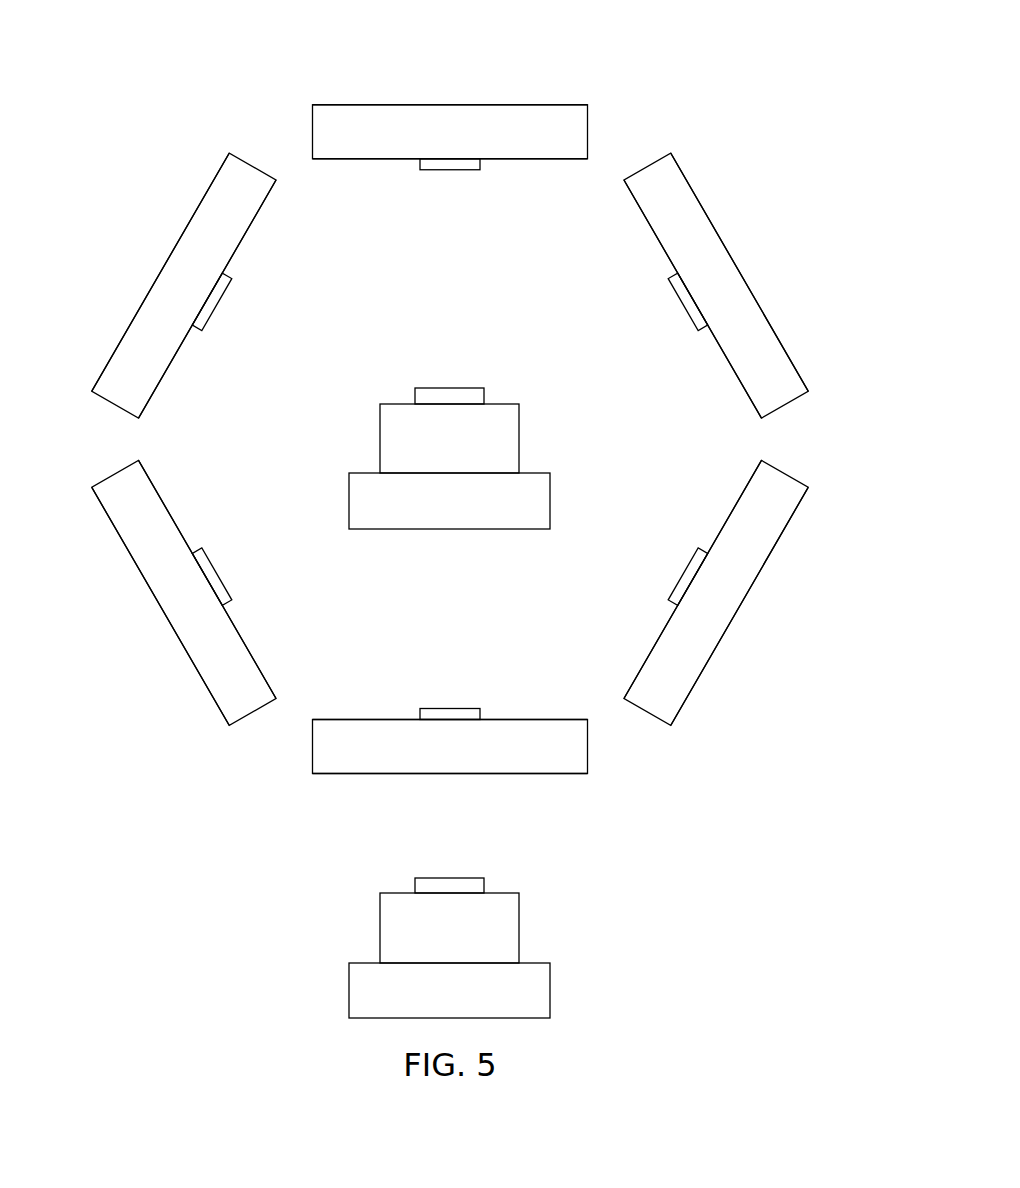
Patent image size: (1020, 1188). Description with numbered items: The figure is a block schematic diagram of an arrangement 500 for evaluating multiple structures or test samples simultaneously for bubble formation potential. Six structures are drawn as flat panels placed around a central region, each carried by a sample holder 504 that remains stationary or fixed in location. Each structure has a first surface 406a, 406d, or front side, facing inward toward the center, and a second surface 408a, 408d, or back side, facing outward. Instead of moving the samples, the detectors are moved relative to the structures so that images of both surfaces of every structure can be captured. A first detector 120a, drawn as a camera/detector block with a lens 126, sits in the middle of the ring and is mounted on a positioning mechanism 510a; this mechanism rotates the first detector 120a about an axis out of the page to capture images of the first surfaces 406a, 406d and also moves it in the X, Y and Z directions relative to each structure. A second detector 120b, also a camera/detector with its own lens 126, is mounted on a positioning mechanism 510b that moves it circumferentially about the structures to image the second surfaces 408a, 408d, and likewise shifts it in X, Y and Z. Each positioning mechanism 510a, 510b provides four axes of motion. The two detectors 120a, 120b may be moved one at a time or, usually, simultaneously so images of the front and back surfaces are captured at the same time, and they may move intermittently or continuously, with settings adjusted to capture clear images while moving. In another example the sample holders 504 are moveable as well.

The arrangement 500 is at (637, 74).
The first surface 406a is at (527, 160).
The first surface 406d is at (528, 718).
The second surface 408a is at (527, 104).
The second surface 408d is at (527, 775).
The sample holder 504 is at (449, 172).
The lens 126 is at (450, 386).
The first detector 120a is at (521, 440).
The second detector 120b is at (521, 930).
The positioning mechanism 510a is at (551, 503).
The positioning mechanism 510b is at (551, 993).